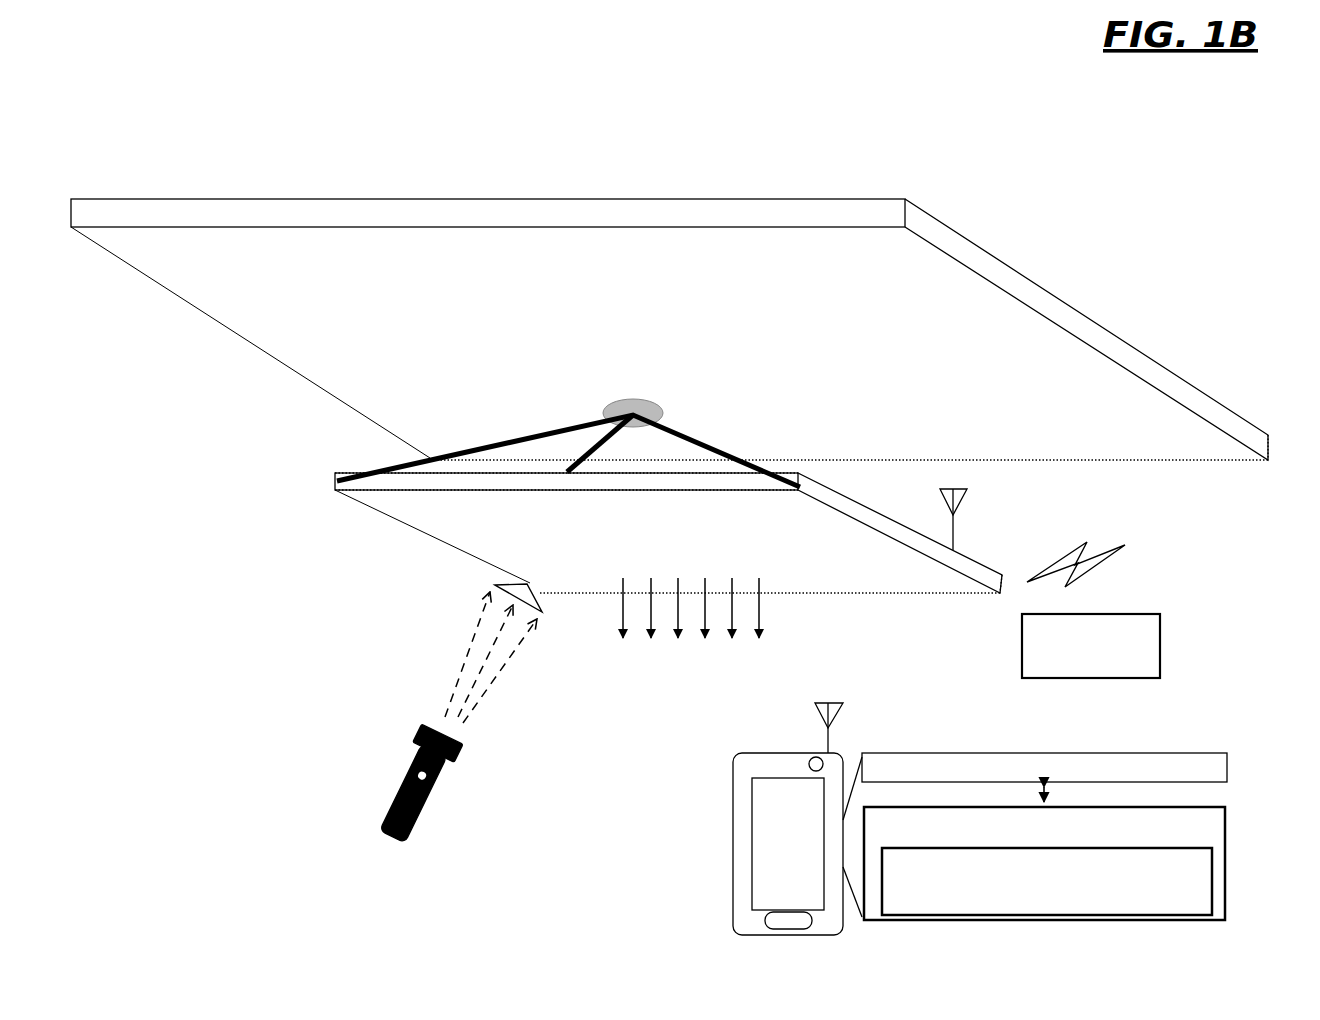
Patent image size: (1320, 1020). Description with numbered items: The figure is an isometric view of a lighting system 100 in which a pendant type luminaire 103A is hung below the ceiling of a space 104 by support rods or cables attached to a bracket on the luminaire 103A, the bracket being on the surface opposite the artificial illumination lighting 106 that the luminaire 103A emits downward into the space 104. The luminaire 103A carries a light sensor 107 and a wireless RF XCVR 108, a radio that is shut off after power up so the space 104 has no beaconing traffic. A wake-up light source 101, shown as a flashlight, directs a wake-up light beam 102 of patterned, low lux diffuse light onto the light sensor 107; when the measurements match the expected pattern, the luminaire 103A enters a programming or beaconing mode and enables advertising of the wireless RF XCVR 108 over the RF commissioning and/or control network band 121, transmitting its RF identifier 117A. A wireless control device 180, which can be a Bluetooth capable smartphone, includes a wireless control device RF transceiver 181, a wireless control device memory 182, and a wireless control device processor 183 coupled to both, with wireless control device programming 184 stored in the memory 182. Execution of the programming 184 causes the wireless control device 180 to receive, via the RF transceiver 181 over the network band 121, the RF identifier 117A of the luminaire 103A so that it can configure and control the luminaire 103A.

The lighting system 100 is at (448, 93).
The space 104 is at (436, 160).
The luminaire 103A is at (337, 481).
The light sensor 107 is at (495, 585).
The artificial illumination lighting 106 is at (669, 584).
The wake-up light beam 102 is at (433, 657).
The wake-up light source 101 is at (397, 800).
The wireless RF transceiver 108 is at (1010, 512).
The RF commissioning and/or control network band 121 is at (1169, 549).
The RF identifier 117A is at (1091, 646).
The wireless control device RF transceiver 181 is at (838, 701).
The wireless control device 180 is at (733, 780).
The wireless control device memory 182 is at (1044, 777).
The wireless control device processor 183 is at (1044, 863).
The wireless control device programming 184 is at (1047, 881).